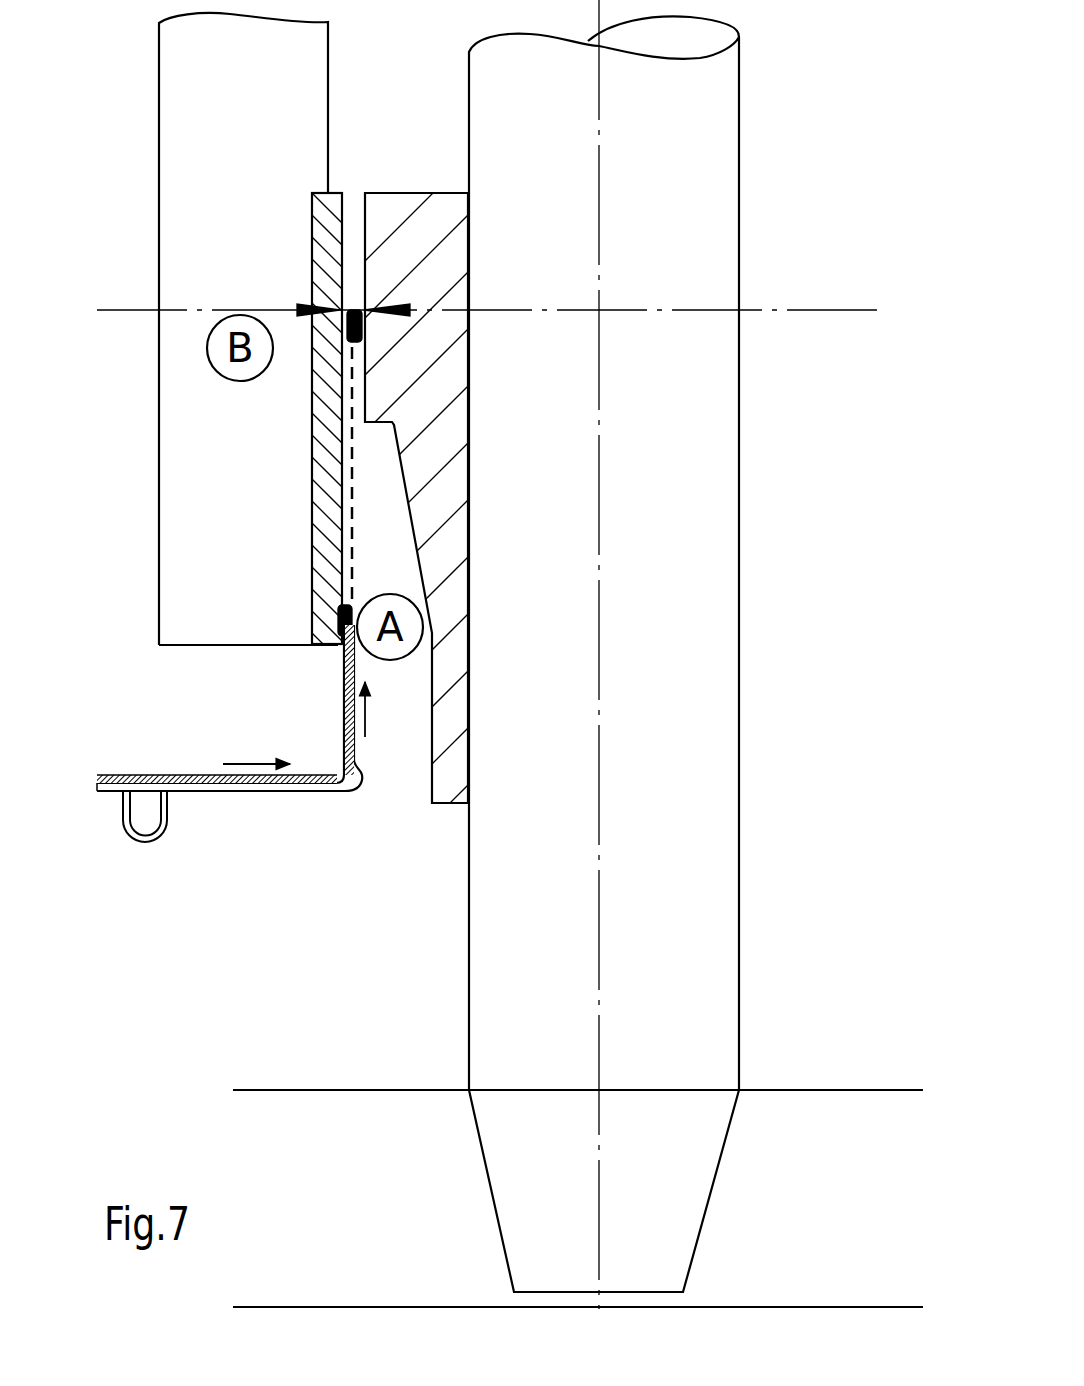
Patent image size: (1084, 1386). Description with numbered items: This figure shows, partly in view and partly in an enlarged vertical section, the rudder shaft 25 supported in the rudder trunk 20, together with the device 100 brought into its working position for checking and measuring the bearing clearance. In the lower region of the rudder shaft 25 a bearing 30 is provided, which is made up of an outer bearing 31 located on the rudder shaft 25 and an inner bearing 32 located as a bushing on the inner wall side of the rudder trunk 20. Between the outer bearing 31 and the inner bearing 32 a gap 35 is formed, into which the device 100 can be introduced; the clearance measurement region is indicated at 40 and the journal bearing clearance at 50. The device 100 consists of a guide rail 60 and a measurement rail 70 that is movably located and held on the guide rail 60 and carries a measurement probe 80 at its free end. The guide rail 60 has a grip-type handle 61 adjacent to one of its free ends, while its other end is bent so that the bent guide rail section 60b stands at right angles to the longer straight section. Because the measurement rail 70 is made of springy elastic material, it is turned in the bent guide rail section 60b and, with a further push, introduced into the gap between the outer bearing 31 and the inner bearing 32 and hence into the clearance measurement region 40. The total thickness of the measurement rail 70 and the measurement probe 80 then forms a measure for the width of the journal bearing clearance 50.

The rudder trunk 20 is at (200, 625).
The rudder shaft 25 is at (700, 920).
The bearing 30 is at (341, 189).
The outer bearing 31 is at (448, 263).
The inner bearing 32 is at (320, 582).
The gap 35 is at (355, 247).
The clearance measurement region 40 is at (823, 310).
The journal bearing clearance 50 is at (353, 377).
The guide rail 60 is at (198, 797).
The bent guide rail section 60b is at (397, 864).
The grip-type handle 61 is at (140, 843).
The measurement rail 70 is at (307, 776).
The measurement probe 80 is at (337, 625).
The device 100 is at (148, 768).